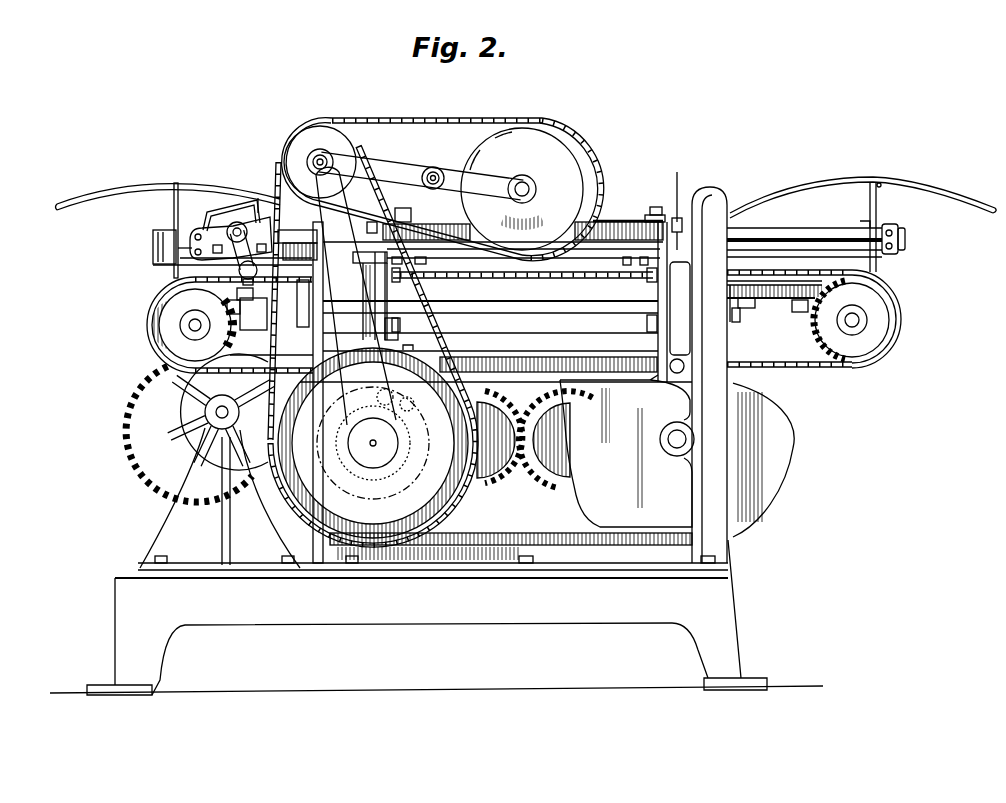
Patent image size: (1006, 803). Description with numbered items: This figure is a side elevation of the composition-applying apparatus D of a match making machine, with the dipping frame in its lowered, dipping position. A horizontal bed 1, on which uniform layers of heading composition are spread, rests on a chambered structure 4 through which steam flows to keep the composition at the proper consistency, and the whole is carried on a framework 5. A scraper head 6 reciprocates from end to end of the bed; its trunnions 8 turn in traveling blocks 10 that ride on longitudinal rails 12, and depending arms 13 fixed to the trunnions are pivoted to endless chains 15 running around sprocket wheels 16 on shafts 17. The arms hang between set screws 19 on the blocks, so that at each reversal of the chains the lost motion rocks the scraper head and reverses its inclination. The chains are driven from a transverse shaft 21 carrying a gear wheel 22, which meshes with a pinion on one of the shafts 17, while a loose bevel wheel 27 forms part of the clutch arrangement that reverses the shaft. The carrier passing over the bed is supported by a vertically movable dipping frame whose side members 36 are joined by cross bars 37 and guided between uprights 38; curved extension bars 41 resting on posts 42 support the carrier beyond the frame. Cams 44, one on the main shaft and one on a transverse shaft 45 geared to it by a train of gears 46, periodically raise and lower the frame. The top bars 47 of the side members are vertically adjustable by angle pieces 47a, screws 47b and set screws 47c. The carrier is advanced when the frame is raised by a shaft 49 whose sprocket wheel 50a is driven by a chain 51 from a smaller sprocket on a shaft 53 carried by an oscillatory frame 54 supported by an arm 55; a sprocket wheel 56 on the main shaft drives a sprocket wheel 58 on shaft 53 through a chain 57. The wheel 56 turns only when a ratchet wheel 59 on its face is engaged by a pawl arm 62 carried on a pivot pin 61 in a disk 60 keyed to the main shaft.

The horizontal bed 1 is at (774, 253).
The chambered structure 4 is at (771, 310).
The framework 5 is at (421, 579).
The scraper head 6 is at (240, 206).
The trunnions 8 is at (215, 181).
The traveling blocks 10 is at (189, 234).
The longitudinal rails 12 is at (472, 238).
The depending arms 13 is at (181, 281).
The endless chains 15 is at (493, 321).
The sprocket wheels 16 is at (521, 330).
The shafts 17 is at (499, 332).
The set screws 19 is at (193, 173).
The transverse shaft 21 is at (172, 412).
The gear wheel 22 is at (186, 434).
The bevel wheel 27 is at (171, 412).
The side members 36 is at (530, 350).
The cross bars 37 is at (647, 201).
The uprights 38 is at (506, 359).
The curved extension bars 41 is at (526, 188).
The posts 42 is at (531, 215).
The cams 44 is at (650, 456).
The transverse shaft 45 is at (670, 455).
The train of gears 46 is at (535, 457).
The top bars 47 is at (523, 221).
The angle pieces 47a is at (524, 317).
The screws 47b is at (526, 334).
The set screws 47c is at (529, 195).
The shaft 49 is at (527, 178).
The sprocket wheel 50a is at (528, 174).
The chain 51 is at (443, 176).
The shaft 53 is at (421, 166).
The oscillatory frame 54 is at (434, 168).
The arm 55 is at (351, 287).
The sprocket wheel 56 is at (373, 478).
The chain 57 is at (364, 346).
The sprocket wheel 58 is at (320, 146).
The ratchet wheel 59 is at (387, 463).
The disk 60 is at (373, 446).
The pivot pin 61 is at (423, 403).
The pawl arm 62 is at (399, 387).
The composition-applying apparatus D is at (436, 617).